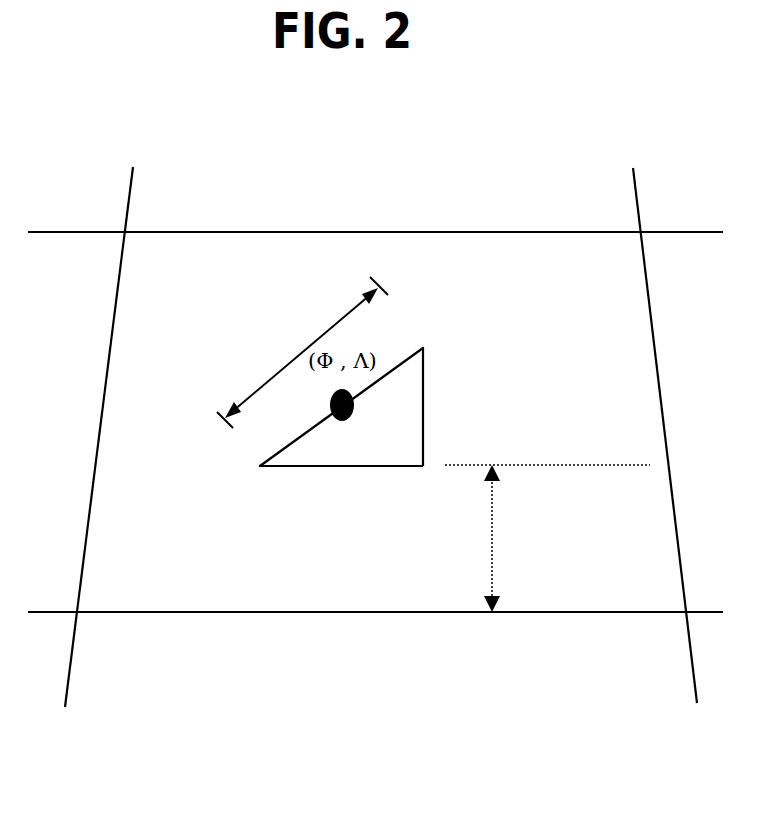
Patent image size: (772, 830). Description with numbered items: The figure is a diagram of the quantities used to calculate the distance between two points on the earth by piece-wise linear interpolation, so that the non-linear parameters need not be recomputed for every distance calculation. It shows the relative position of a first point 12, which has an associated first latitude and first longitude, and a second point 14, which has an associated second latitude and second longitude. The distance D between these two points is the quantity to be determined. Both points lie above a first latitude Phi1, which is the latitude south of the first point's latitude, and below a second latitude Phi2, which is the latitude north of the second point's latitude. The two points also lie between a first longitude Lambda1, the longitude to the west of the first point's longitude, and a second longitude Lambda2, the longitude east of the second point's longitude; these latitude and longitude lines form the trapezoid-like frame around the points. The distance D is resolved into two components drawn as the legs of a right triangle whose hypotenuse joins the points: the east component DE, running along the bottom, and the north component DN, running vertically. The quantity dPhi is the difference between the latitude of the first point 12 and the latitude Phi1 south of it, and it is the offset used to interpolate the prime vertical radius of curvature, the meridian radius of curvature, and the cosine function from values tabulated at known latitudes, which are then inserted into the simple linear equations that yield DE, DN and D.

The first point 12 is at (219, 483).
The second point 14 is at (469, 319).
The distance D is at (302, 352).
The north component of the distance DN is at (445, 407).
The east component of the distance DE is at (341, 485).
The latitude difference dΦ dPhi is at (547, 538).
The first latitude Phi1 is at (375, 632).
The second latitude Phi2 is at (375, 214).
The first longitude Lambda1 is at (77, 437).
The second longitude Lambda2 is at (675, 435).